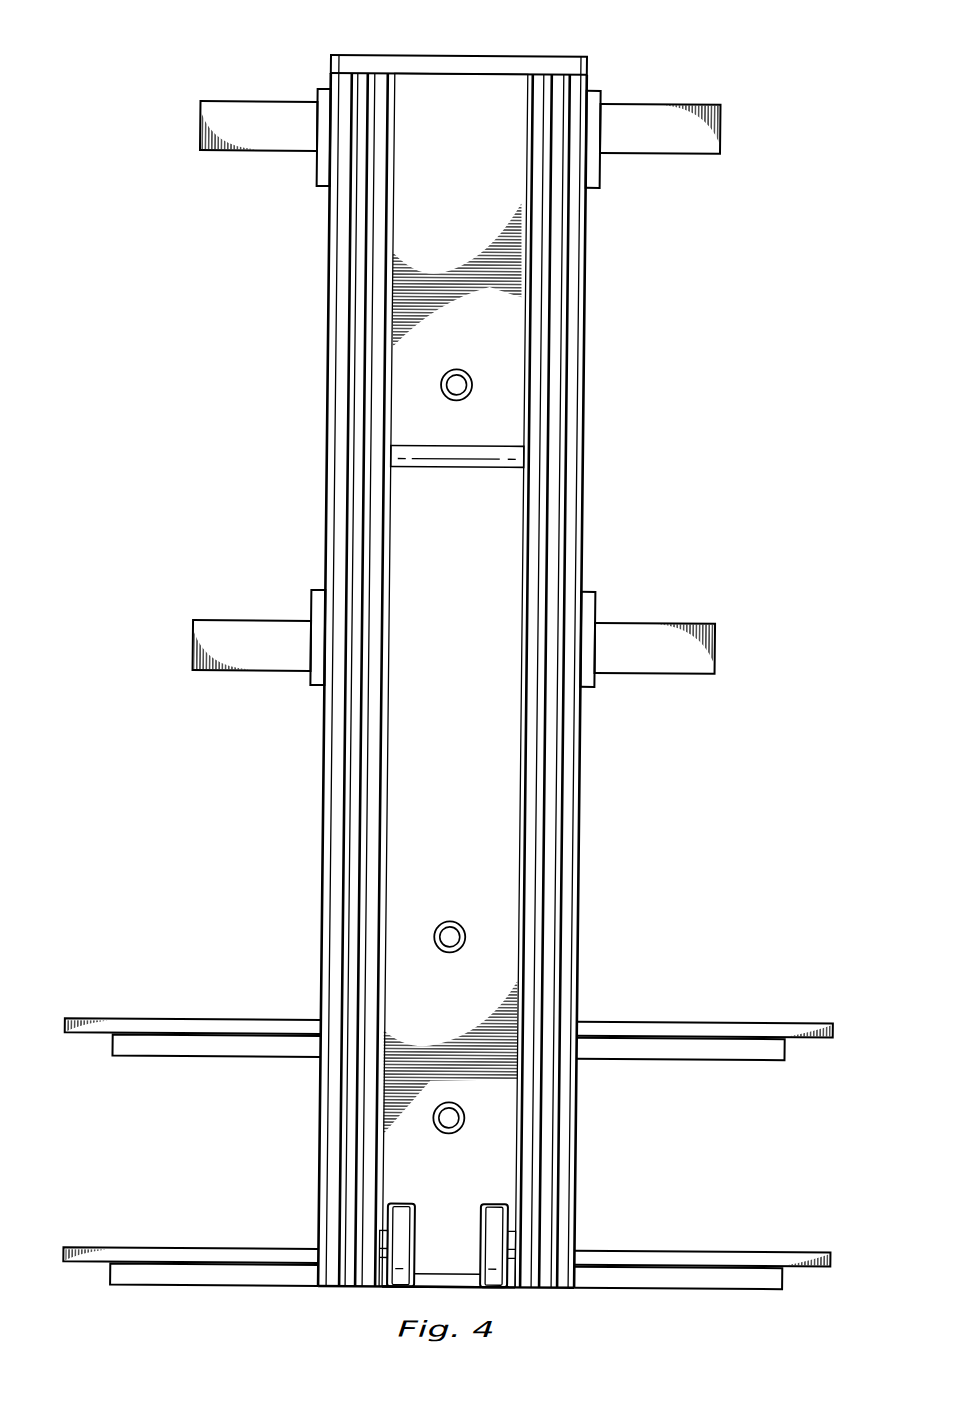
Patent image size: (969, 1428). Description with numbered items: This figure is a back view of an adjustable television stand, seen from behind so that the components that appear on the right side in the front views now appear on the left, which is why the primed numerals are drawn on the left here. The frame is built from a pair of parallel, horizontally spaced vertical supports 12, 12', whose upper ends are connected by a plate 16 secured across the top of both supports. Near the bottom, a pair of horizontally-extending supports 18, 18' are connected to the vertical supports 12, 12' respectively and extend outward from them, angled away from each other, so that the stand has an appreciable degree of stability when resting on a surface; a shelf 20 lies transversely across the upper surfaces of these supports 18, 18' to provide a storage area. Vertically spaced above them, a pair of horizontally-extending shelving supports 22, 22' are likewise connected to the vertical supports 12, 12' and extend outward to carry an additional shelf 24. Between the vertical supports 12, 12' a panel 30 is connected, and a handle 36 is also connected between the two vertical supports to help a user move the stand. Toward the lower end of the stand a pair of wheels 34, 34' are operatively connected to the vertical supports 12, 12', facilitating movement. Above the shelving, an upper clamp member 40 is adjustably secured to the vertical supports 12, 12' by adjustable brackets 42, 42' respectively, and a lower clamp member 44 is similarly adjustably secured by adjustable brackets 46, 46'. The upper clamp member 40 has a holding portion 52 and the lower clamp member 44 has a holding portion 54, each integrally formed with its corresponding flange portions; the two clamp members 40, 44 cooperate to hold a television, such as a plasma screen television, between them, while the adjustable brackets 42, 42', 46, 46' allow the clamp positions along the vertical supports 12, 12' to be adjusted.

The vertical support 12 is at (588, 681).
The vertical support 12' is at (317, 680).
The plate 16 is at (352, 55).
The horizontally-extending support 18 is at (678, 1302).
The horizontally-extending support 18' is at (214, 1301).
The shelf 20 is at (697, 1249).
The horizontally-extending shelving support 22 is at (680, 1074).
The horizontally-extending shelving support 22' is at (216, 1073).
The additional shelf 24 is at (697, 1020).
The panel 30 is at (474, 723).
The wheel 34 is at (465, 1221).
The wheel 34' is at (407, 1220).
The handle 36 is at (472, 445).
The upper clamp member 40 is at (494, 150).
The adjustable bracket 42 is at (624, 146).
The adjustable bracket 42' is at (292, 144).
The lower clamp member 44 is at (489, 671).
The adjustable bracket 46 is at (616, 634).
The adjustable bracket 46' is at (289, 632).
The holding portion 52 is at (684, 154).
The holding portion 54 is at (677, 673).